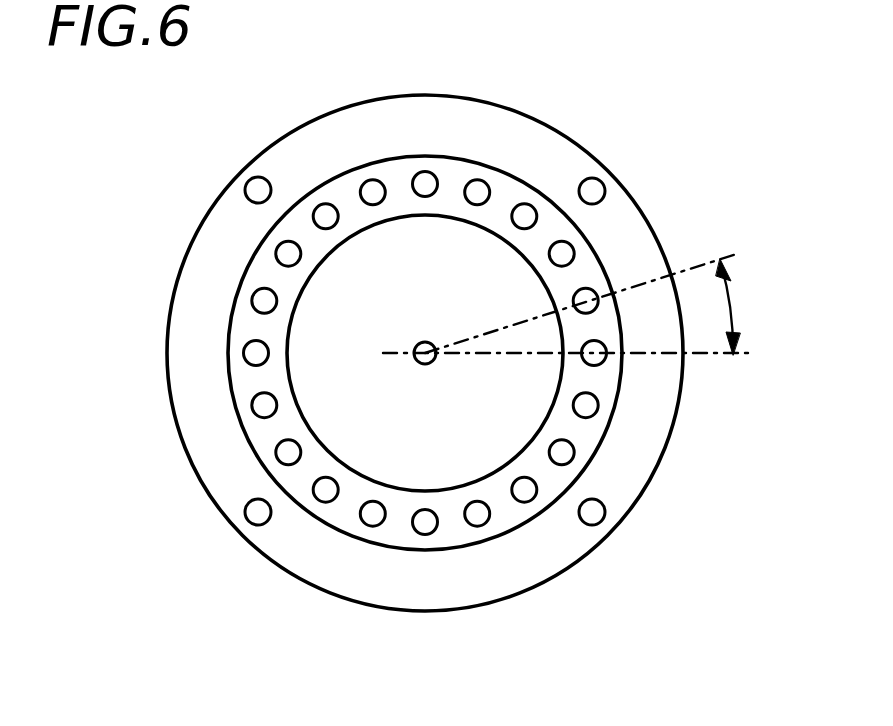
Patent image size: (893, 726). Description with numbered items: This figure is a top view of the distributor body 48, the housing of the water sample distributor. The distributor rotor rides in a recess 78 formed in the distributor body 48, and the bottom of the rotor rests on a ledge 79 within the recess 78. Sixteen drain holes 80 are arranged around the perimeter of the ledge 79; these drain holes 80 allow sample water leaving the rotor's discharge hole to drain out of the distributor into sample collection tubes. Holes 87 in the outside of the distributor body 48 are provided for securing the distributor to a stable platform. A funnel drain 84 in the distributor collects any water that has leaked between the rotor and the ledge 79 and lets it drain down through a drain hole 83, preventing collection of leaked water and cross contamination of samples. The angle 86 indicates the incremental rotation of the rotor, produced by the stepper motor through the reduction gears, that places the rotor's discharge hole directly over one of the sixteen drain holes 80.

The distributor body 48 is at (575, 138).
The recess 78 is at (255, 262).
The ledge 79 is at (555, 475).
The drain holes 80 is at (258, 351).
The drain hole 83 is at (413, 358).
The funnel drain 84 is at (515, 403).
The angle 86 is at (578, 304).
The holes 87 is at (596, 193).